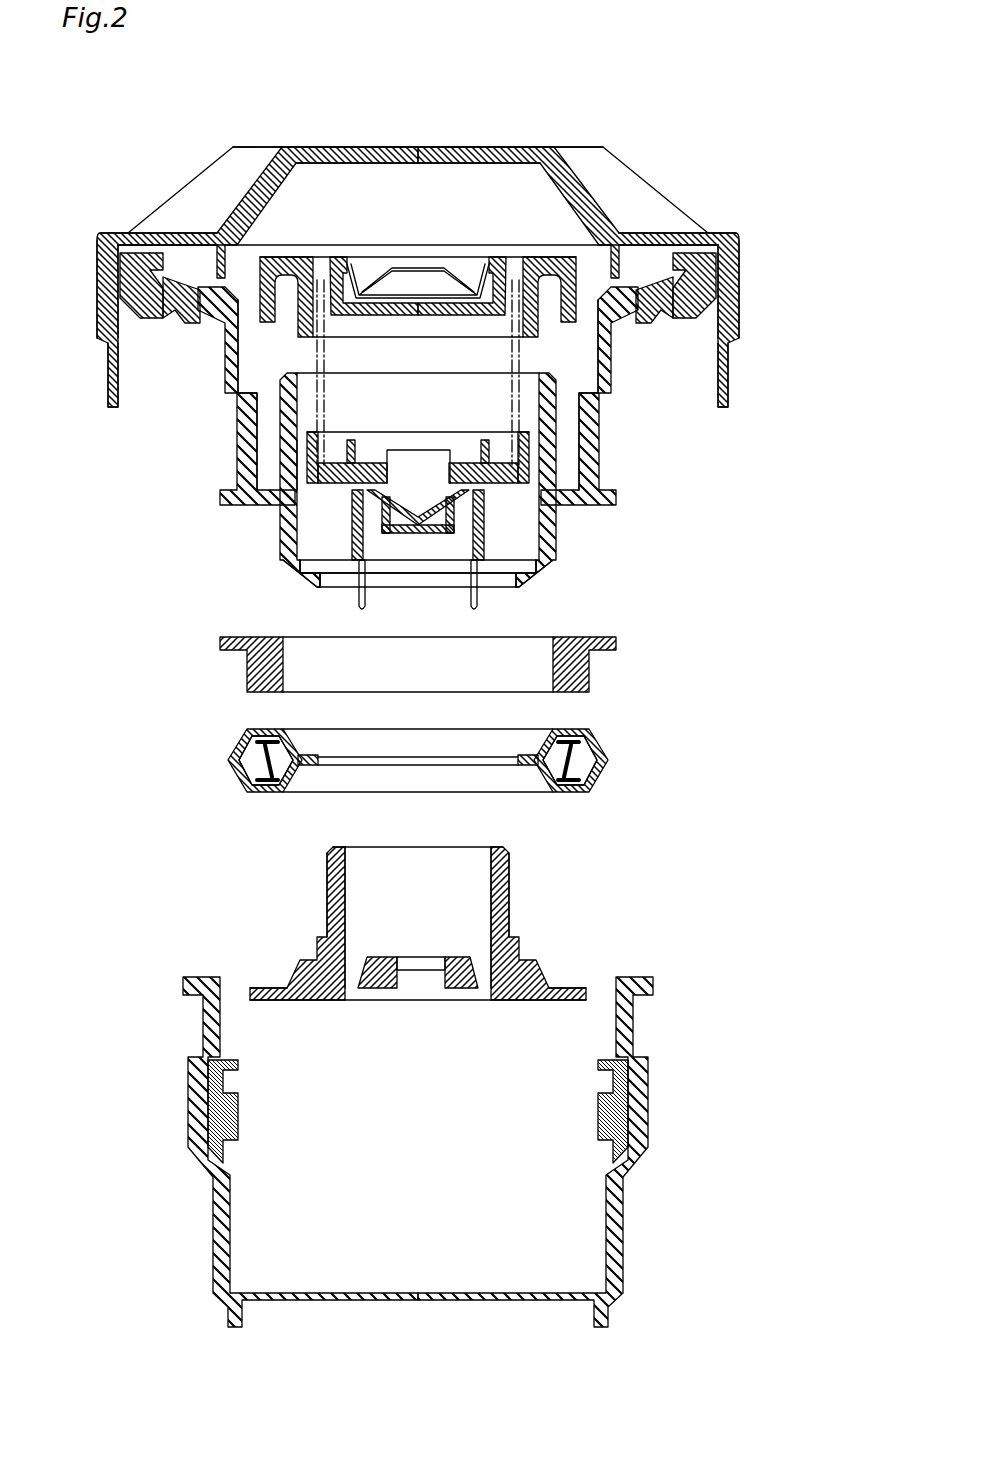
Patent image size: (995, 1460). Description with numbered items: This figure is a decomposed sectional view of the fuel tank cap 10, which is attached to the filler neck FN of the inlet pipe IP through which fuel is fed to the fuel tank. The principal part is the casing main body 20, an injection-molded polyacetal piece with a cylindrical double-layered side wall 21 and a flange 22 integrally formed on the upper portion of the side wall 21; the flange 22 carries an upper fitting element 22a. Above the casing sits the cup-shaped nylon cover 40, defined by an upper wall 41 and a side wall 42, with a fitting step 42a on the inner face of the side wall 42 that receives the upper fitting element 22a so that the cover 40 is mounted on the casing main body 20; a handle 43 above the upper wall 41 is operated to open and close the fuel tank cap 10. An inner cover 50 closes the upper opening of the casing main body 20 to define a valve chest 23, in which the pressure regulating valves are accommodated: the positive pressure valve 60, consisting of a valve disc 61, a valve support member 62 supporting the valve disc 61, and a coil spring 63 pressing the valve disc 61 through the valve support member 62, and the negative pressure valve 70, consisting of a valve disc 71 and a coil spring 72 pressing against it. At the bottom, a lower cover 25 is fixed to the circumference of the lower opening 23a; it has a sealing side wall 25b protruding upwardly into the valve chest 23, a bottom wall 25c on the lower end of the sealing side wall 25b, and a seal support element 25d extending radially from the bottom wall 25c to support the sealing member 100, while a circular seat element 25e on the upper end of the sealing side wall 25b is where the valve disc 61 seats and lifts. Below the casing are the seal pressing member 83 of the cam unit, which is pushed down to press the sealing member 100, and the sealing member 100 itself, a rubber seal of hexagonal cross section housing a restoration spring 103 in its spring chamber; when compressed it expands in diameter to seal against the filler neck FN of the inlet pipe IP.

The fuel tank cap 10 is at (657, 128).
The casing main body 20 is at (609, 480).
The side wall 21 is at (598, 447).
The flange 22 is at (737, 257).
The upper fitting element 22a is at (702, 268).
The valve chest 23 is at (345, 358).
The lower opening 23a is at (500, 585).
The lower cover 25 is at (526, 1008).
The sealing side wall 25b is at (507, 917).
The bottom wall 25c is at (455, 972).
The seal support element 25d is at (547, 975).
The circular seat element 25e is at (507, 852).
The cover 40 is at (716, 221).
The upper wall 41 is at (637, 233).
The side wall 42 is at (733, 337).
The fitting step 42a is at (708, 280).
The handle 43 is at (437, 150).
The inner cover 50 is at (300, 251).
The positive pressure valve 60 is at (307, 447).
The valve disc 61 is at (330, 522).
The valve support member 62 is at (288, 472).
The coil spring 63 is at (300, 425).
The negative pressure valve 70 is at (355, 545).
The valve disc 71 is at (352, 565).
The coil spring 72 is at (305, 610).
The seal pressing member 83 is at (590, 680).
The sealing member 100 is at (598, 755).
The restoration spring 103 is at (583, 792).
The filler neck FN is at (640, 1025).
The inlet pipe IP is at (637, 1203).